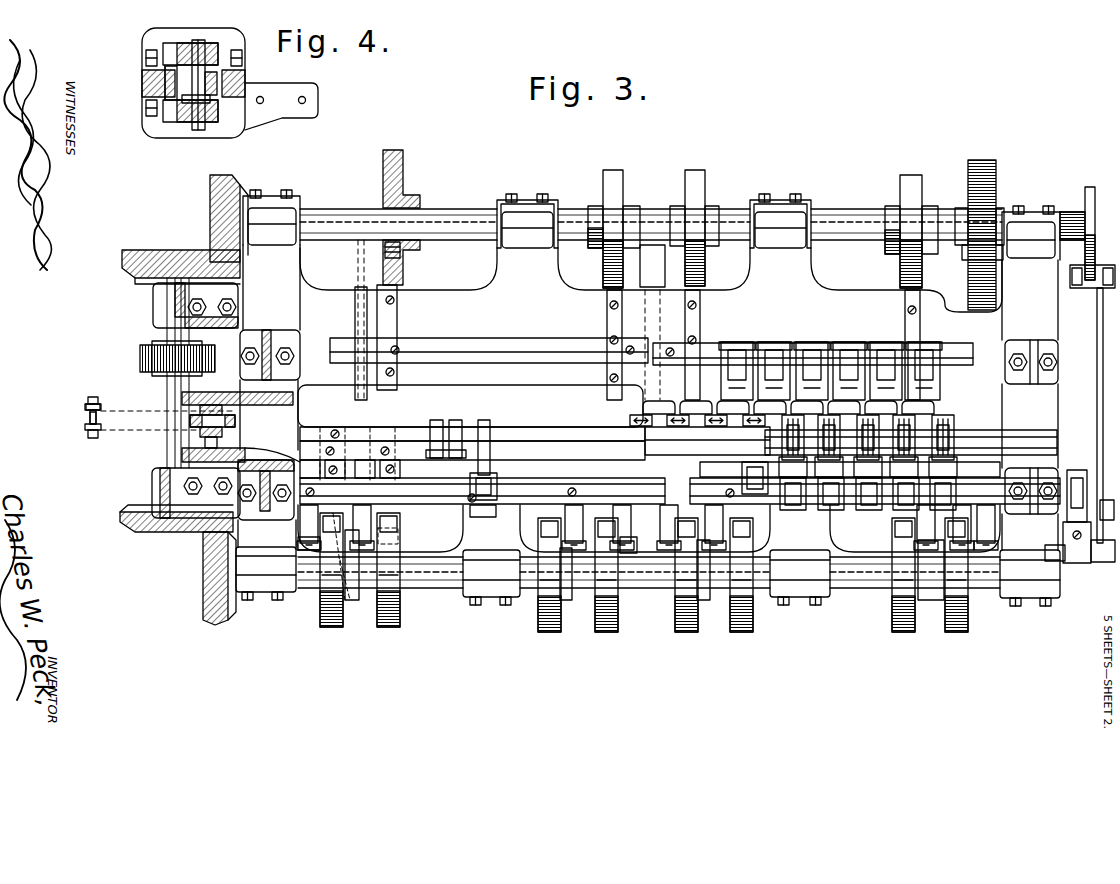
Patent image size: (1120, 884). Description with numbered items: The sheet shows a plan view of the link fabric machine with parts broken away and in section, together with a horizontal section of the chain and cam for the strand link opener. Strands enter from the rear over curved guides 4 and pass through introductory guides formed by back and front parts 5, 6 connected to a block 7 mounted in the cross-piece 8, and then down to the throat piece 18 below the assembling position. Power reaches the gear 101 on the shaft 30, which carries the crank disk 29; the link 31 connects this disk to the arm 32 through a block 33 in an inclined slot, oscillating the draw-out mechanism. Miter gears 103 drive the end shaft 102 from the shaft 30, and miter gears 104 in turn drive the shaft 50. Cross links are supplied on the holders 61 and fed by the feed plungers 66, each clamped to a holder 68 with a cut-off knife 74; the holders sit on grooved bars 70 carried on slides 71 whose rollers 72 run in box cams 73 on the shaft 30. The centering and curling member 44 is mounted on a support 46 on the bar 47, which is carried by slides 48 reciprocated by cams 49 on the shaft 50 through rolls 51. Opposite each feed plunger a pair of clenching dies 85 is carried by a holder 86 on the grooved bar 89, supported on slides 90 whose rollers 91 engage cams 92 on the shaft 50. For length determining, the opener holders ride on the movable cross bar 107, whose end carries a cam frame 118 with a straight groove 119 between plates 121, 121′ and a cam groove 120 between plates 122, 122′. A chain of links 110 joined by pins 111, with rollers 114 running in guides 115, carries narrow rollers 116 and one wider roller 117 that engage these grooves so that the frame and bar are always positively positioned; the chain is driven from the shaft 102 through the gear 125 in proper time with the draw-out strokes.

In FIG. 3, the curved guide 4 is at (945, 440).
In FIG. 3, the back part of introductory guide 5 is at (685, 415).
In FIG. 3, the front part of introductory guide 6 is at (650, 403).
In FIG. 3, the block 7 is at (940, 418).
In FIG. 3, the cross-piece 8 is at (1040, 447).
In FIG. 3, the throat piece 18 is at (182, 410).
In FIG. 3, the crank disk 29 is at (1088, 190).
In FIG. 3, the shaft 30 is at (845, 222).
In FIG. 3, the link 31 is at (1097, 332).
In FIG. 3, the arm 32 is at (1090, 552).
In FIG. 3, the block 33 is at (1062, 548).
In FIG. 3, the member 44 is at (488, 445).
In FIG. 3, the support 46 is at (482, 505).
In FIG. 3, the bar 47 is at (505, 505).
In FIG. 3, the slide 48 is at (312, 550).
In FIG. 3, the cam 49 is at (330, 628).
In FIG. 3, the shaft 50 is at (440, 580).
In FIG. 3, the roll 51 is at (345, 600).
In FIG. 3, the guide or holder 61 is at (620, 392).
In FIG. 3, the feed plunger 66 is at (735, 342).
In FIG. 3, the holder 68 is at (772, 352).
In FIG. 3, the grooved bar 70 is at (437, 342).
In FIG. 3, the slide 71 is at (370, 274).
In FIG. 3, the roller 72 is at (388, 243).
In FIG. 3, the box cam 73 is at (398, 175).
In FIG. 3, the cut-off knife 74 is at (848, 350).
In FIG. 3, the clenching die 85 is at (437, 430).
In FIG. 3, the holder 86 is at (448, 460).
In FIG. 3, the grooved bar 89 is at (420, 440).
In FIG. 3, the slide 90 is at (375, 520).
In FIG. 3, the roller 91 is at (398, 538).
In FIG. 3, the cam 92 is at (388, 628).
In FIG. 3, the gear 101 is at (980, 162).
In FIG. 3, the end shaft 102 is at (165, 384).
In FIG. 3, the miter gears 103 is at (210, 212).
In FIG. 3, the miter gears 104 is at (170, 538).
In FIG. 3, the grooved cross bar 107 is at (645, 432).
In FIG. 4, the chain link 110 is at (212, 76).
In FIG. 4, the pin 111 is at (190, 76).
In FIG. 3, the pin 111 is at (88, 428).
In FIG. 4, the roller 114 is at (178, 46).
In FIG. 3, the roller 114 is at (88, 403).
In FIG. 4, the guide 115 is at (208, 46).
In FIG. 3, the narrow roller 116 is at (88, 410).
In FIG. 4, the wider roller 117 is at (185, 102).
In FIG. 3, the wider roller 117 is at (200, 432).
In FIG. 4, the cam frame 118 is at (145, 84).
In FIG. 4, the groove 119 is at (214, 76).
In FIG. 4, the cam groove 120 is at (190, 92).
In FIG. 4, the plate 121 is at (146, 74).
In FIG. 4, the plate 121′ is at (243, 82).
In FIG. 4, the plate 122 is at (148, 95).
In FIG. 4, the plate 122′ is at (247, 98).
In FIG. 3, the gear 125 is at (140, 362).